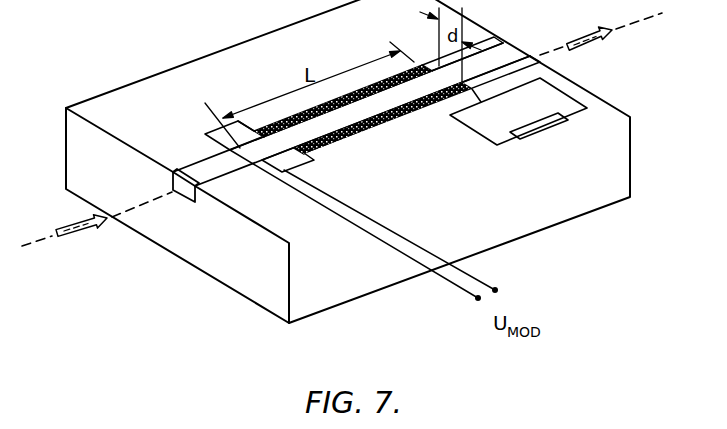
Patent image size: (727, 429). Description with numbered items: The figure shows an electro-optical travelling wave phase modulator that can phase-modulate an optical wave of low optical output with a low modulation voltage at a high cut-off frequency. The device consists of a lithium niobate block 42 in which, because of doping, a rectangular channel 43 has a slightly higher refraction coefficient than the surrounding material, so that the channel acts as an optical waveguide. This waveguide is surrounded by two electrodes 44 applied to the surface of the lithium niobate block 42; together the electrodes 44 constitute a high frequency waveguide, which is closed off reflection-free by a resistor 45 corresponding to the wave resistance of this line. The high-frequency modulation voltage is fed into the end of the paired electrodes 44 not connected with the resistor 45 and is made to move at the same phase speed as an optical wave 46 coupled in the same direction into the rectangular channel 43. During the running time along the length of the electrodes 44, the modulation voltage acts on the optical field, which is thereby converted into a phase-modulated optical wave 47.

The lithium niobate block 42 is at (211, 256).
The rectangular channel 43 is at (187, 196).
The electrodes 44 is at (307, 121).
The resistor 45 is at (537, 128).
The optical wave 46 is at (81, 239).
The phase-modulated optical wave 47 is at (581, 50).